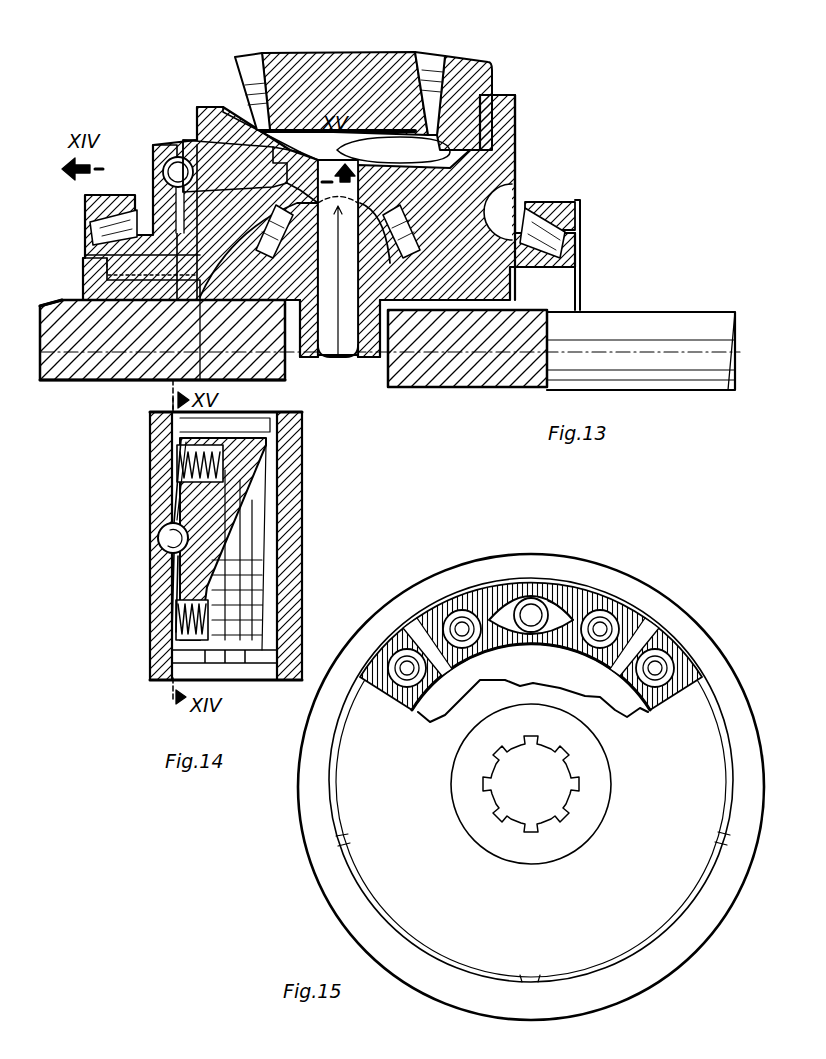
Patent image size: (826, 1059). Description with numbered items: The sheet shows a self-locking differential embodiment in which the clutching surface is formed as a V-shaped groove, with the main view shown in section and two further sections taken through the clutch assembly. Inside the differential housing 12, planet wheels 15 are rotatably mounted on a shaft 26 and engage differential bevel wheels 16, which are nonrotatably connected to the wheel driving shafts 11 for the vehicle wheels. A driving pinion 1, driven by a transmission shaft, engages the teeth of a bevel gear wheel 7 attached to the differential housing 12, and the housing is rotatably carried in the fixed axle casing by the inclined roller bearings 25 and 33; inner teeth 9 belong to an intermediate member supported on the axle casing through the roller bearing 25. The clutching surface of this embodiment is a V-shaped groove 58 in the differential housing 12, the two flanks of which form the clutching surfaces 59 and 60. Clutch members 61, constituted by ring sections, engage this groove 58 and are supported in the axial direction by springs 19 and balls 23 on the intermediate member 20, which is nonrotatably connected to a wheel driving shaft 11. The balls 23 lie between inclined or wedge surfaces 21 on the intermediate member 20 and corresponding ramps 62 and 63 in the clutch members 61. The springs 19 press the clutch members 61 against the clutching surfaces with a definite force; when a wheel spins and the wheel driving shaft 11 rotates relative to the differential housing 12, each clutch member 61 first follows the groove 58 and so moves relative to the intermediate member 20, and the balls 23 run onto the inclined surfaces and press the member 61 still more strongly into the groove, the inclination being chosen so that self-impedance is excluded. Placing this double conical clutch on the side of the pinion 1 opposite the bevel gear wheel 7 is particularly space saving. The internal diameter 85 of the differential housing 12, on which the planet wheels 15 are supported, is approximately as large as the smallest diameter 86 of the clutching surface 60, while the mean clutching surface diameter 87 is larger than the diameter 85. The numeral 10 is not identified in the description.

In FIG. 13, the driving pinion 1 is at (290, 70).
In FIG. 13, the bevel gear wheel 7 is at (455, 92).
In FIG. 13, the inner teeth 9 is at (90, 290).
In FIG. 13, the drive shaft 10 is at (66, 377).
In FIG. 13, the wheel driving shaft 11 is at (100, 348).
In FIG. 13, the differential housing 12 is at (500, 128).
In FIG. 13, the planet wheel 15 is at (388, 217).
In FIG. 13, the differential bevel wheel 16 is at (430, 292).
In FIG. 14, the compression spring 19 is at (175, 465).
In FIG. 15, the compression spring 19 is at (400, 648).
In FIG. 13, the intermediate member 20 is at (160, 160).
In FIG. 14, the intermediate member 20 is at (158, 650).
In FIG. 14, the inclined or wedge surface 21 is at (170, 512).
In FIG. 13, the ball 23 is at (166, 173).
In FIG. 14, the ball 23 is at (160, 538).
In FIG. 15, the ball 23 is at (531, 598).
In FIG. 13, the inclined roller bearing 25 is at (95, 232).
In FIG. 13, the shaft 26 is at (307, 360).
In FIG. 13, the inclined roller bearing 33 is at (573, 232).
In FIG. 13, the V-shaped groove 58 is at (284, 170).
In FIG. 15, the V-shaped groove 58 is at (650, 655).
In FIG. 13, the clutching surface 59 is at (222, 138).
In FIG. 13, the clutching surface 60 is at (200, 148).
In FIG. 13, the clutch member 61 is at (190, 150).
In FIG. 14, the clutch member 61 is at (238, 527).
In FIG. 15, the clutch member 61 is at (590, 602).
In FIG. 14, the inclined surface or ramp 62 is at (170, 578).
In FIG. 15, the inclined surface or ramp 62 is at (507, 602).
In FIG. 14, the inclined surface or ramp 63 is at (178, 506).
In FIG. 15, the inclined surface or ramp 63 is at (560, 602).
In FIG. 13, the internal diameter 85 is at (338, 358).
In FIG. 13, the smallest diameter 86 is at (100, 255).
In FIG. 13, the mean clutching surface diameter 87 is at (247, 300).